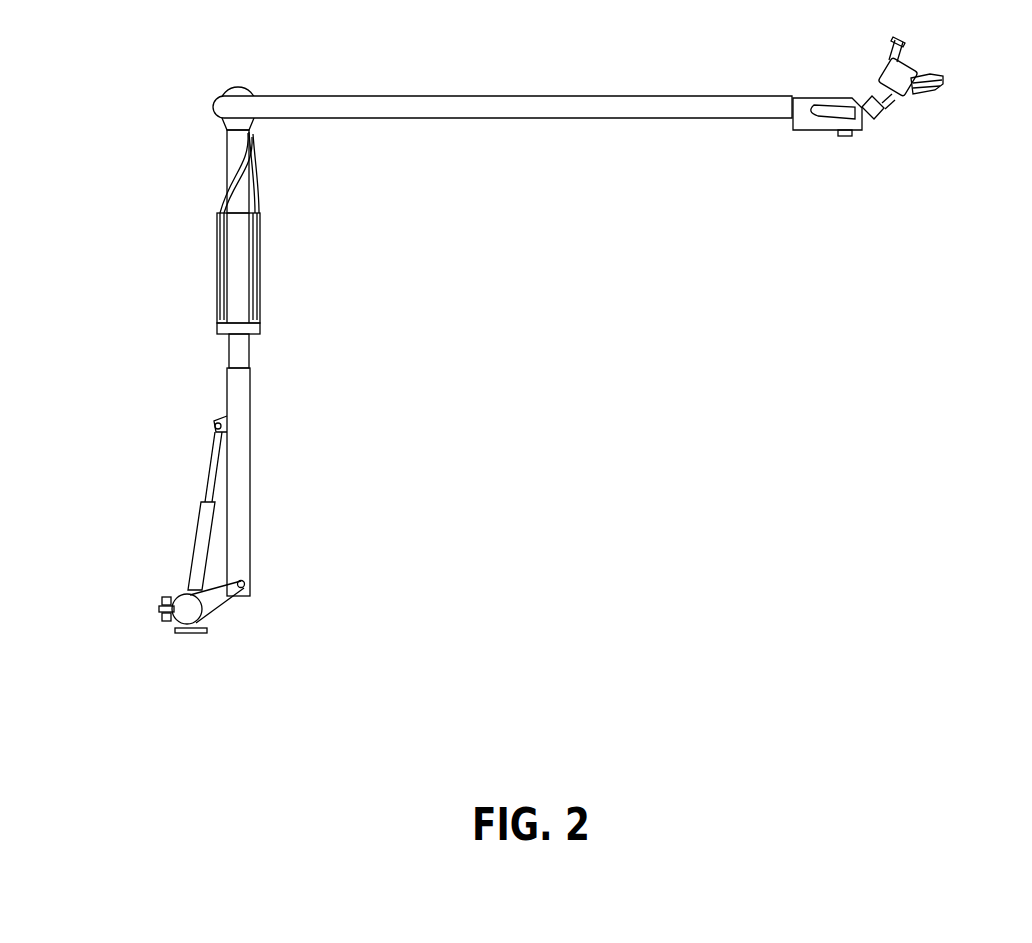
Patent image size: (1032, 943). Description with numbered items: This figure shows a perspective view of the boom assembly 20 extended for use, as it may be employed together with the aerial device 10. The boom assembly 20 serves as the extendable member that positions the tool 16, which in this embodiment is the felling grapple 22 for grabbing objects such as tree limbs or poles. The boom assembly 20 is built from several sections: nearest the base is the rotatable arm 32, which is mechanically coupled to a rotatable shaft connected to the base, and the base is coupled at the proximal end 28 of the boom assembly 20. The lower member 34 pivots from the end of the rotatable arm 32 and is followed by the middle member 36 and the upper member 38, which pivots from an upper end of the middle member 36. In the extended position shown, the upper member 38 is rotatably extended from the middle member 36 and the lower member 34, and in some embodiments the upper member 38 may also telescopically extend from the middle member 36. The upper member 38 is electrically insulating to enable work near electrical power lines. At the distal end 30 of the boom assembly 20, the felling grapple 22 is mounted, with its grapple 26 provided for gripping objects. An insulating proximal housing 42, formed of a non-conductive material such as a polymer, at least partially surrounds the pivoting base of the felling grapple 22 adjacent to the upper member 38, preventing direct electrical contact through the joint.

The aerial device 10 is at (82, 82).
The tool 16 is at (872, 34).
The boom assembly 20 is at (128, 326).
The felling grapple 22 is at (889, 112).
The grapple 26 is at (955, 64).
The proximal end 28 is at (98, 502).
The distal end 30 is at (792, 152).
The rotatable arm 32 is at (178, 598).
The lower member 34 is at (250, 481).
The middle member 36 is at (232, 248).
The upper member 38 is at (325, 93).
The insulating proximal housing 42 is at (851, 134).